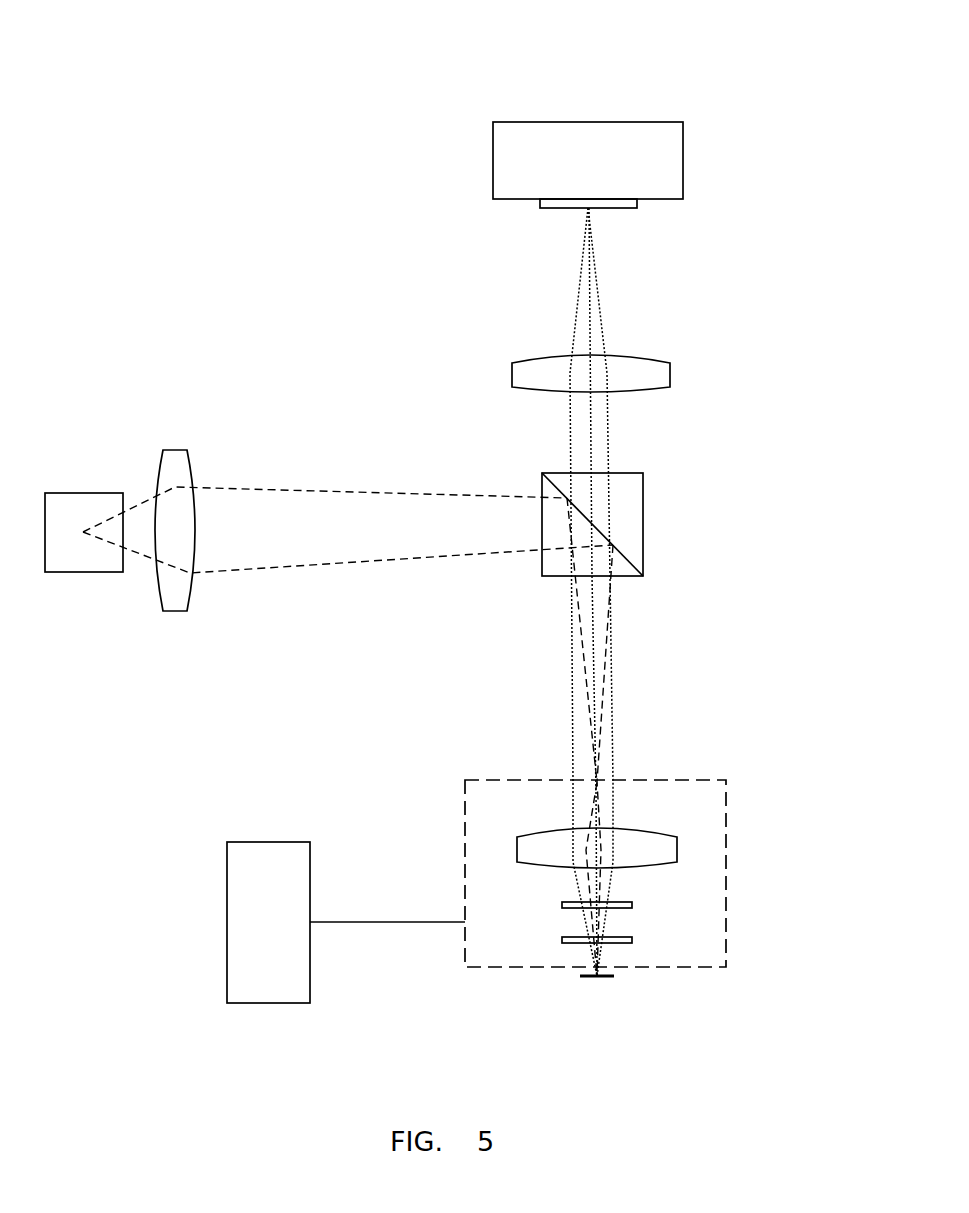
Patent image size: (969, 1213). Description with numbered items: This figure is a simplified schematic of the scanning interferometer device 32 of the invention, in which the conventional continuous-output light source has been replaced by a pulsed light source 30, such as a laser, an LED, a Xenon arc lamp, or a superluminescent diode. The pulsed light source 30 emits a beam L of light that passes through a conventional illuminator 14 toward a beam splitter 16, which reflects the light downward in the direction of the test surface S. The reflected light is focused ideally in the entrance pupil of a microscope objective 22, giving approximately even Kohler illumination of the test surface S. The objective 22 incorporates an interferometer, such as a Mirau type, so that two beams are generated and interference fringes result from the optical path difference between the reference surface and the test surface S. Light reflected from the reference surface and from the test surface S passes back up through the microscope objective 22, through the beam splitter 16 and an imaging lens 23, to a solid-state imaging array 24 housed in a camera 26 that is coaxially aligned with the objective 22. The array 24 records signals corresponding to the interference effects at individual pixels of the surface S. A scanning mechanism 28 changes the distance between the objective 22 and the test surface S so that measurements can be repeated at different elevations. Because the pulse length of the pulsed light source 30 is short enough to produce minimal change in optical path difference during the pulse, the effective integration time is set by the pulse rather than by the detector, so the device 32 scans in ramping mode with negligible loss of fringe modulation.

The illuminator 14 is at (178, 468).
The beam splitter 16 is at (630, 522).
The microscope objective 22 is at (726, 878).
The imaging lens 23 is at (658, 375).
The solid-state imaging array 24 is at (617, 208).
The camera 26 is at (668, 160).
The scanning mechanism 28 is at (253, 860).
The pulsed light source 30 is at (68, 512).
The device 32 is at (766, 95).
The beam of light L is at (140, 543).
The test surface S is at (597, 978).